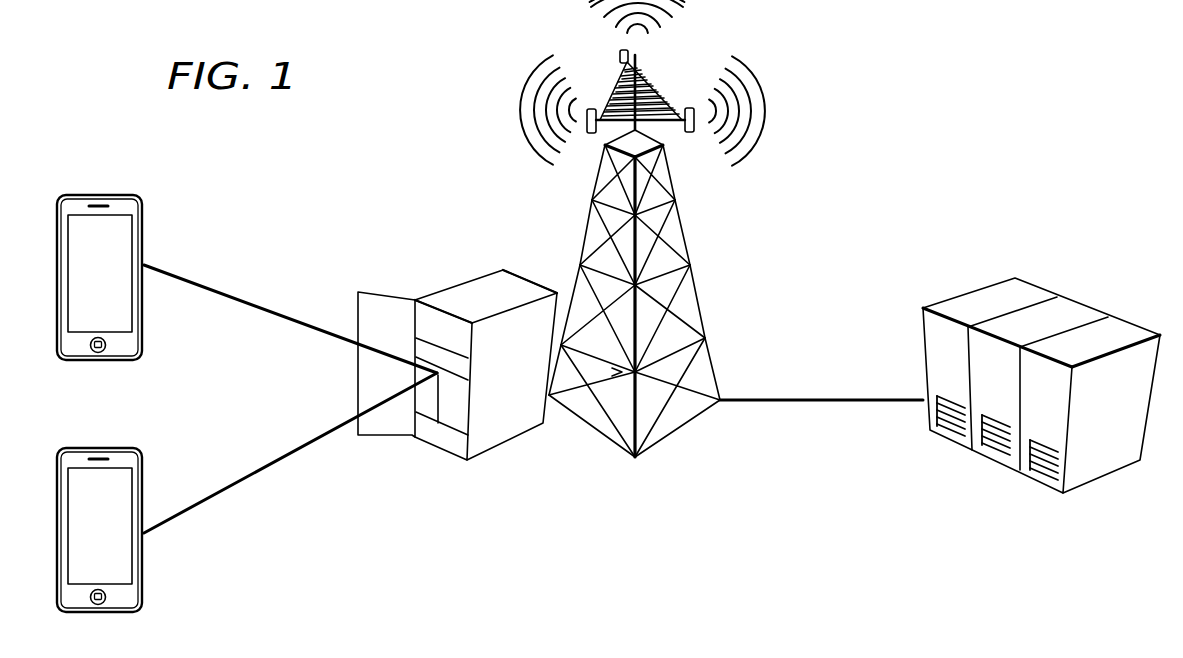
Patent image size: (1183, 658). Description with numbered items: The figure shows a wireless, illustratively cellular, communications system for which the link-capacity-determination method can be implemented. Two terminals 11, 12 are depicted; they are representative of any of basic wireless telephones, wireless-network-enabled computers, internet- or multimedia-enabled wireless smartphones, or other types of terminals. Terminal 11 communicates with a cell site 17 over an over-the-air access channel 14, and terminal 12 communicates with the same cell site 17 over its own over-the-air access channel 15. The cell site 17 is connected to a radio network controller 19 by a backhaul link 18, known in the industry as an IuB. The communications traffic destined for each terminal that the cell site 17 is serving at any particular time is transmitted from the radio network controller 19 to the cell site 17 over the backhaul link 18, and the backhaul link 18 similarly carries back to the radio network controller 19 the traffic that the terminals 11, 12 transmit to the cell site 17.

The terminal 11 is at (100, 192).
The terminal 12 is at (101, 446).
The access channel 14 is at (293, 314).
The access channel 15 is at (306, 485).
The cell site 17 is at (635, 458).
The backhaul link 18 is at (845, 398).
The radio network controller 19 is at (1050, 296).